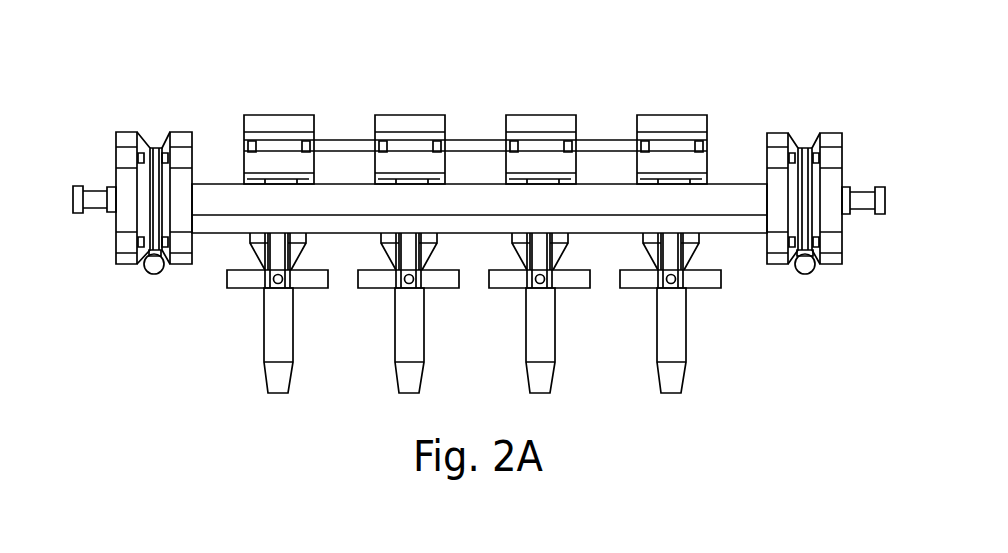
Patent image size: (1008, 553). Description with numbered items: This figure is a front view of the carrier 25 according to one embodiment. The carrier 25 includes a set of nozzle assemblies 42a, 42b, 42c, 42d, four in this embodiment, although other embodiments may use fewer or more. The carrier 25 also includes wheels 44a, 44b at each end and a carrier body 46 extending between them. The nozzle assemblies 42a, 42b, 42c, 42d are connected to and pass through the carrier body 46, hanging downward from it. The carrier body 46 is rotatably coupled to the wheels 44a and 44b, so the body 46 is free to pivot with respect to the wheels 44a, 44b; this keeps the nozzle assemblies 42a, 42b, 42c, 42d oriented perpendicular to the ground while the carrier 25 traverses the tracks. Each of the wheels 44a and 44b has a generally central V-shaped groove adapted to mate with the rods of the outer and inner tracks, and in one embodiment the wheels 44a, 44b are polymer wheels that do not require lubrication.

The carrier 25 is at (130, 28).
The nozzle assembly 42a is at (265, 113).
The nozzle assembly 42b is at (396, 113).
The nozzle assembly 42c is at (527, 113).
The nozzle assembly 42d is at (658, 113).
The wheel 44a is at (116, 153).
The wheel 44b is at (822, 135).
The carrier body 46 is at (213, 235).